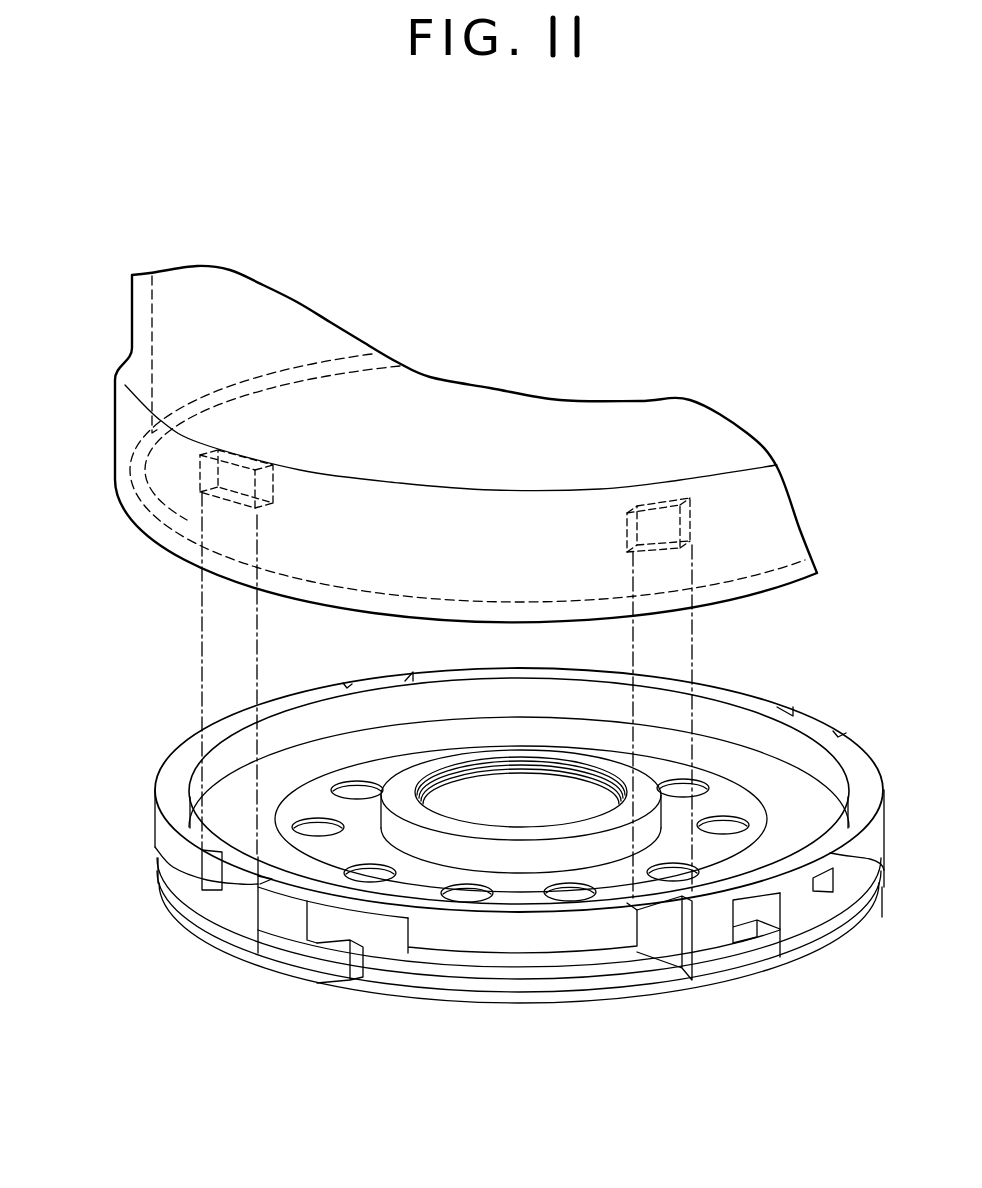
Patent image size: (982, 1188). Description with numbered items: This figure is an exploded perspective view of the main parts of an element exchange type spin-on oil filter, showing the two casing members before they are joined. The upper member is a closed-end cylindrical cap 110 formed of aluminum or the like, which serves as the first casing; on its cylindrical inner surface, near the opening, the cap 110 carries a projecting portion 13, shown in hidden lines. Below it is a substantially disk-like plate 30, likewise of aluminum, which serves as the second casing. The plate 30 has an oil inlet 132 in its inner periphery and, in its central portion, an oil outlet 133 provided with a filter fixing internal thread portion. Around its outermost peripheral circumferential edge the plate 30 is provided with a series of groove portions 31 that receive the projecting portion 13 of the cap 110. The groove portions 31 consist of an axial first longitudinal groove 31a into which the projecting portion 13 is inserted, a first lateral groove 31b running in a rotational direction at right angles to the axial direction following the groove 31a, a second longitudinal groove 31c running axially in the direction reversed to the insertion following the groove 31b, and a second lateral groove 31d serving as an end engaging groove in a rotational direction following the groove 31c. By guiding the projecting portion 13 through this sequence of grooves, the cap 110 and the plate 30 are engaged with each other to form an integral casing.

The cap 110 is at (132, 320).
The projecting portion 13 is at (652, 498).
The plate 30 is at (172, 773).
The oil inlet 132 is at (316, 824).
The oil outlet 133 is at (483, 748).
The groove portion 31 is at (519, 960).
The first longitudinal groove 31a is at (660, 923).
The first lateral groove 31b is at (527, 966).
The second longitudinal groove 31c is at (393, 952).
The second lateral groove 31d is at (306, 999).